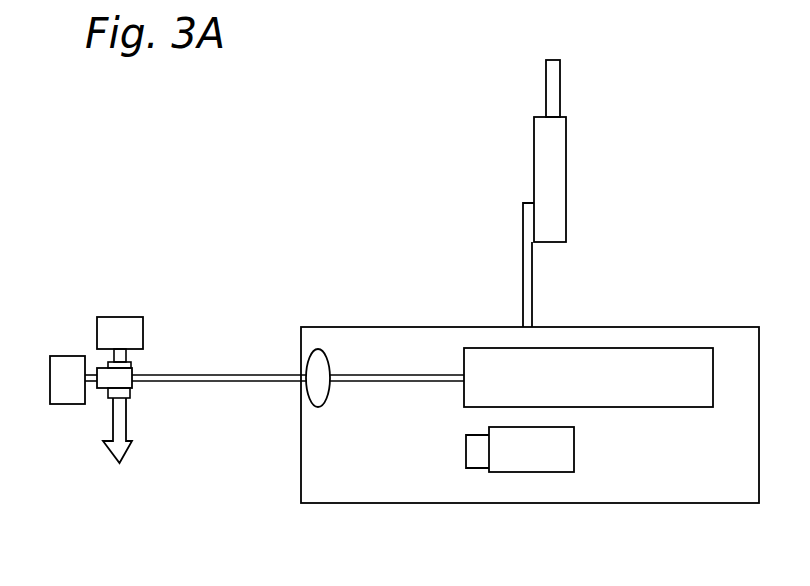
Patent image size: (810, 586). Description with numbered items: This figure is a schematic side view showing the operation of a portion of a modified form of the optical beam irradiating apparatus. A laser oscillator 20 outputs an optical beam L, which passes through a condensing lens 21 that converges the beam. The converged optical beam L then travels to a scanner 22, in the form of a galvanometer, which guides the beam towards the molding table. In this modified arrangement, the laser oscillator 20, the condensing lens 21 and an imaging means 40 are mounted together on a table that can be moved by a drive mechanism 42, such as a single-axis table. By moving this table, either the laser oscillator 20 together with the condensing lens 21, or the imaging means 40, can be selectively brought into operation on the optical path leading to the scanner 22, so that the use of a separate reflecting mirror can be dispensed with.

The laser oscillator 20 is at (689, 356).
The condensing lens 21 is at (318, 349).
The scanner 22 is at (103, 374).
The imaging means 40 is at (532, 457).
The drive mechanism 42 is at (567, 150).
The optical beam L is at (222, 377).